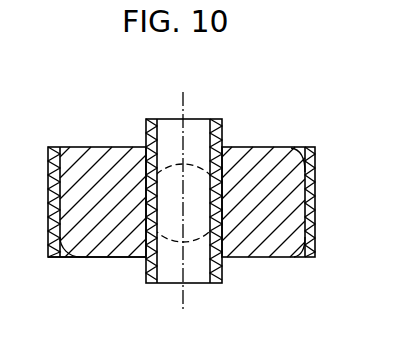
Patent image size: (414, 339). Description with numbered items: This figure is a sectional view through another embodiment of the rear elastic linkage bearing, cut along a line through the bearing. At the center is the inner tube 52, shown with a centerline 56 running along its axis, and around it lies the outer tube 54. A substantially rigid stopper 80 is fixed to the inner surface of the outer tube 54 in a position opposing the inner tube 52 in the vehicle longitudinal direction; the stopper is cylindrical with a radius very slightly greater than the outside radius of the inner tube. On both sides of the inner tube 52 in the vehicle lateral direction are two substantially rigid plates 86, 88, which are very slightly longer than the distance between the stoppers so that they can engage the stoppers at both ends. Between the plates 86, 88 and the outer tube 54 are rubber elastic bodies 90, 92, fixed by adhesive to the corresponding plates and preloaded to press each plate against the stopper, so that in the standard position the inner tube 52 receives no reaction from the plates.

The inner tube 52 is at (217, 137).
The outer tube 54 is at (50, 153).
The axis 56 is at (179, 107).
The stopper 80 is at (193, 241).
The plate 86 is at (225, 258).
The plate 88 is at (143, 258).
The rubber elastic body 90 is at (288, 173).
The rubber elastic body 92 is at (80, 233).